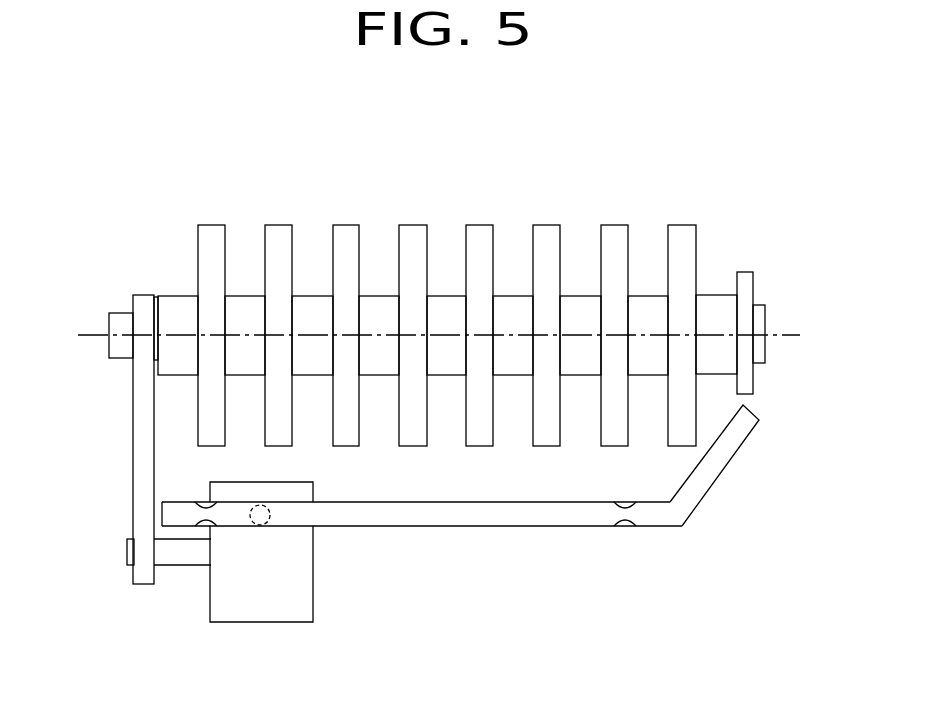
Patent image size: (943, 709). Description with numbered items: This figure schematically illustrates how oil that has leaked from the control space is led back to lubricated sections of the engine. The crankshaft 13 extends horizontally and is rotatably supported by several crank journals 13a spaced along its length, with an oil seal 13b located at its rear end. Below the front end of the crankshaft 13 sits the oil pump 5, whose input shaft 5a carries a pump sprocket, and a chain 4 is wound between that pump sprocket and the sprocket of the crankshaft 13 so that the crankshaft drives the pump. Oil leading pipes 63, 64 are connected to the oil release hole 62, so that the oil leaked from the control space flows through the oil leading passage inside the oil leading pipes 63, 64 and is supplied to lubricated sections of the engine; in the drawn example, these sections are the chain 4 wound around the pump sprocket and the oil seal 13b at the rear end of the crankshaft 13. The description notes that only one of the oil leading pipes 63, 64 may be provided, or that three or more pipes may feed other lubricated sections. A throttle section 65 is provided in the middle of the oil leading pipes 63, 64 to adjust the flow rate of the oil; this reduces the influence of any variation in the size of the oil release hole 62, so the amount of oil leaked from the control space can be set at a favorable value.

The crankshaft 13 is at (449, 315).
The crank journal 13a is at (175, 300).
The oil seal 13b is at (750, 384).
The chain 4 is at (140, 448).
The oil pump 5 is at (318, 603).
The input shaft 5a is at (128, 553).
The oil release hole 62 is at (270, 511).
The oil leading pipe 63 is at (190, 510).
The oil leading pipe 64 is at (654, 515).
The throttle section 65 is at (207, 527).